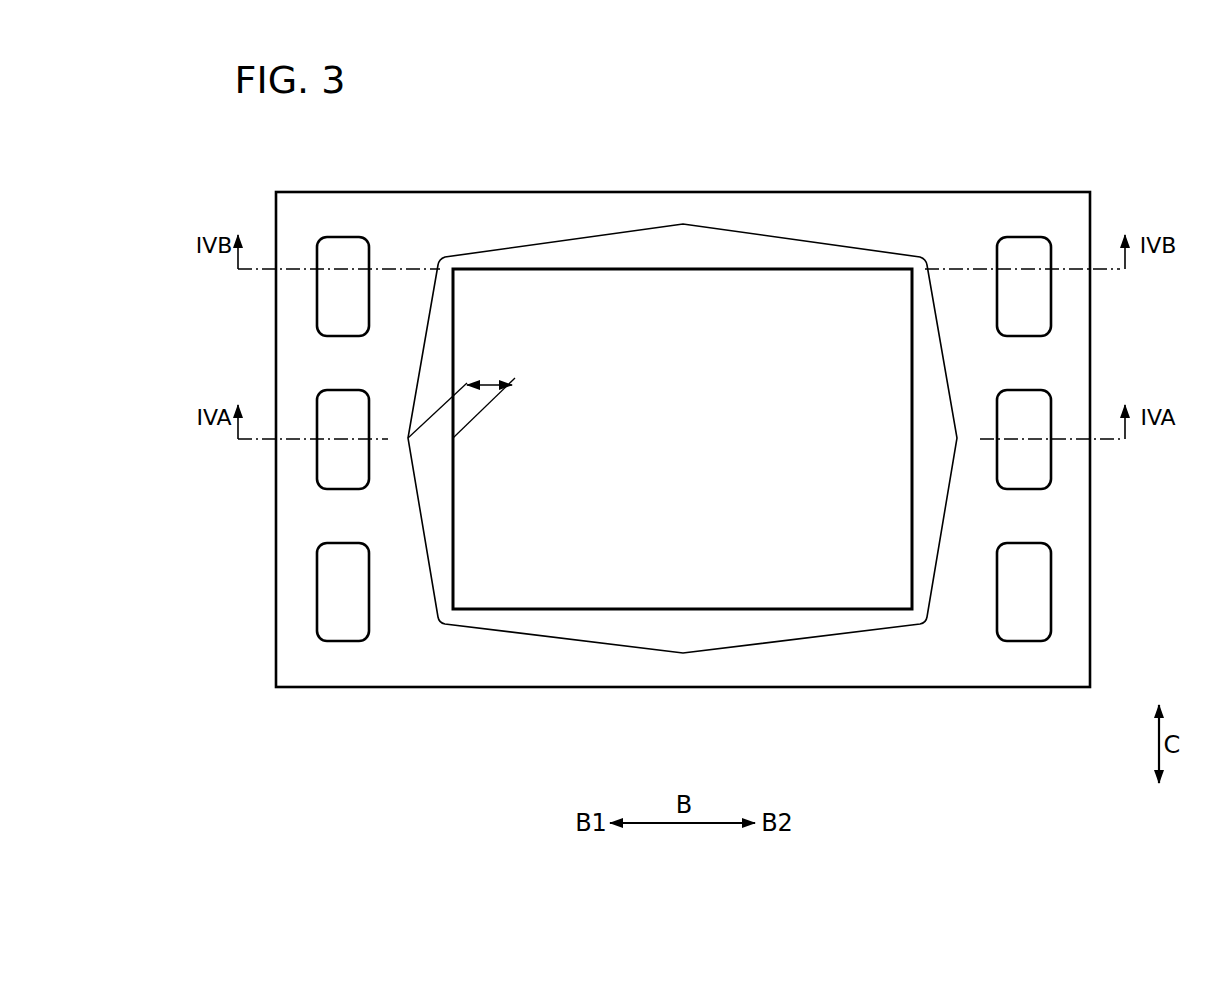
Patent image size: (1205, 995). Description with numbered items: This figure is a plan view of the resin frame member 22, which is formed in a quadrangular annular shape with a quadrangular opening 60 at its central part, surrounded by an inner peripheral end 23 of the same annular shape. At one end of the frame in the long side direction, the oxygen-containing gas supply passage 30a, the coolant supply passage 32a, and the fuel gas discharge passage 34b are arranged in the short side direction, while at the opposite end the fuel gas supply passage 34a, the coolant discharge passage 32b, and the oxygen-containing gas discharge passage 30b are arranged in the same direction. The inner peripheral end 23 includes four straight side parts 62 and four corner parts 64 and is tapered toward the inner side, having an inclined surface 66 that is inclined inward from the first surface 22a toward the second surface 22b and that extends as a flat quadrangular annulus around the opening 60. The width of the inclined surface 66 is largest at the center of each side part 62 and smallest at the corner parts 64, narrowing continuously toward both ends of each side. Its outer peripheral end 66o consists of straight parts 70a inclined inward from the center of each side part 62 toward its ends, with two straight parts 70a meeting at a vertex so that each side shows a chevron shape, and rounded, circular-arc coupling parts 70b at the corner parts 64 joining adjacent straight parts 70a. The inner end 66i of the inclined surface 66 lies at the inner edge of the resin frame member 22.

The resin frame member 22 is at (683, 379).
The first surface 22a is at (315, 672).
The second surface 22b is at (342, 668).
The inner peripheral end 23 is at (573, 230).
The oxygen-containing gas supply passage 30a is at (333, 307).
The oxygen-containing gas discharge passage 30b is at (1035, 602).
The coolant supply passage 32a is at (335, 460).
The coolant discharge passage 32b is at (1033, 460).
The fuel gas supply passage 34a is at (1033, 306).
The fuel gas discharge passage 34b is at (333, 603).
The opening 60 is at (636, 290).
The side part 62 is at (679, 273).
The corner part 64 is at (456, 272).
The inclined surface 66 is at (613, 441).
The inner end of the inclined surface 66i is at (682, 374).
The outer peripheral end of the inclined surface 66o is at (415, 385).
The straight part 70a is at (523, 246).
The coupling part 70b is at (440, 258).